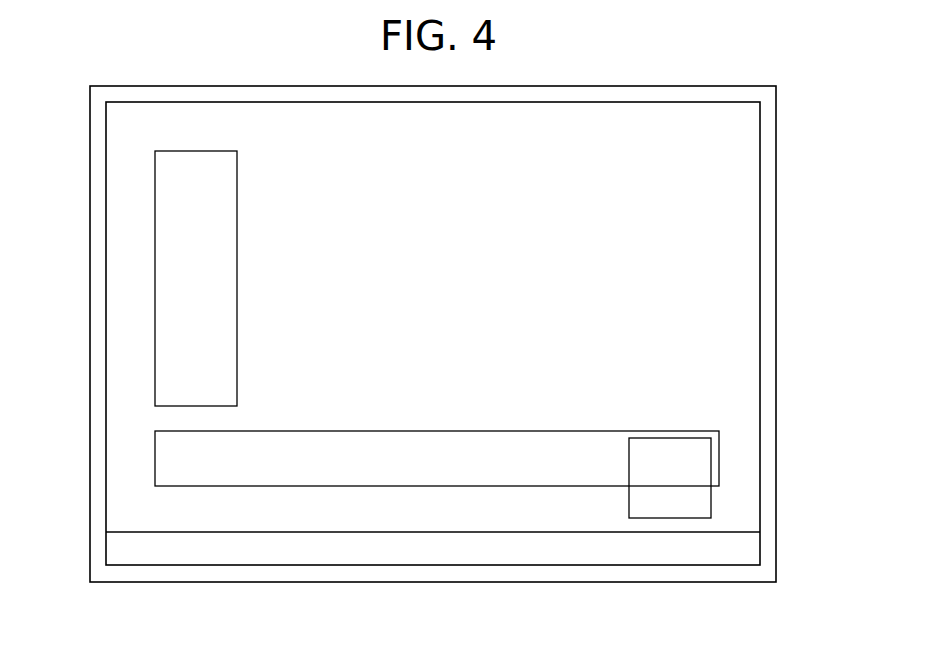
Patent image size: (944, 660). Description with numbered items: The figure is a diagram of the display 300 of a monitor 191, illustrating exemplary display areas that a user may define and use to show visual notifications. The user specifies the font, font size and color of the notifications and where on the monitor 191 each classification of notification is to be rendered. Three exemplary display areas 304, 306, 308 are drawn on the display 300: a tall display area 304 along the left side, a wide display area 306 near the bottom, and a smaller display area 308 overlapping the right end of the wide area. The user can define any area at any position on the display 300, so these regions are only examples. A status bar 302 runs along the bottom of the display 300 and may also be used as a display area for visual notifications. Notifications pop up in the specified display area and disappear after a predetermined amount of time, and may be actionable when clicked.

The monitor 191 is at (776, 198).
The display 300 is at (712, 325).
The status bar 302 is at (197, 566).
The display area 304 is at (155, 209).
The display area 306 is at (155, 459).
The display area 308 is at (711, 503).